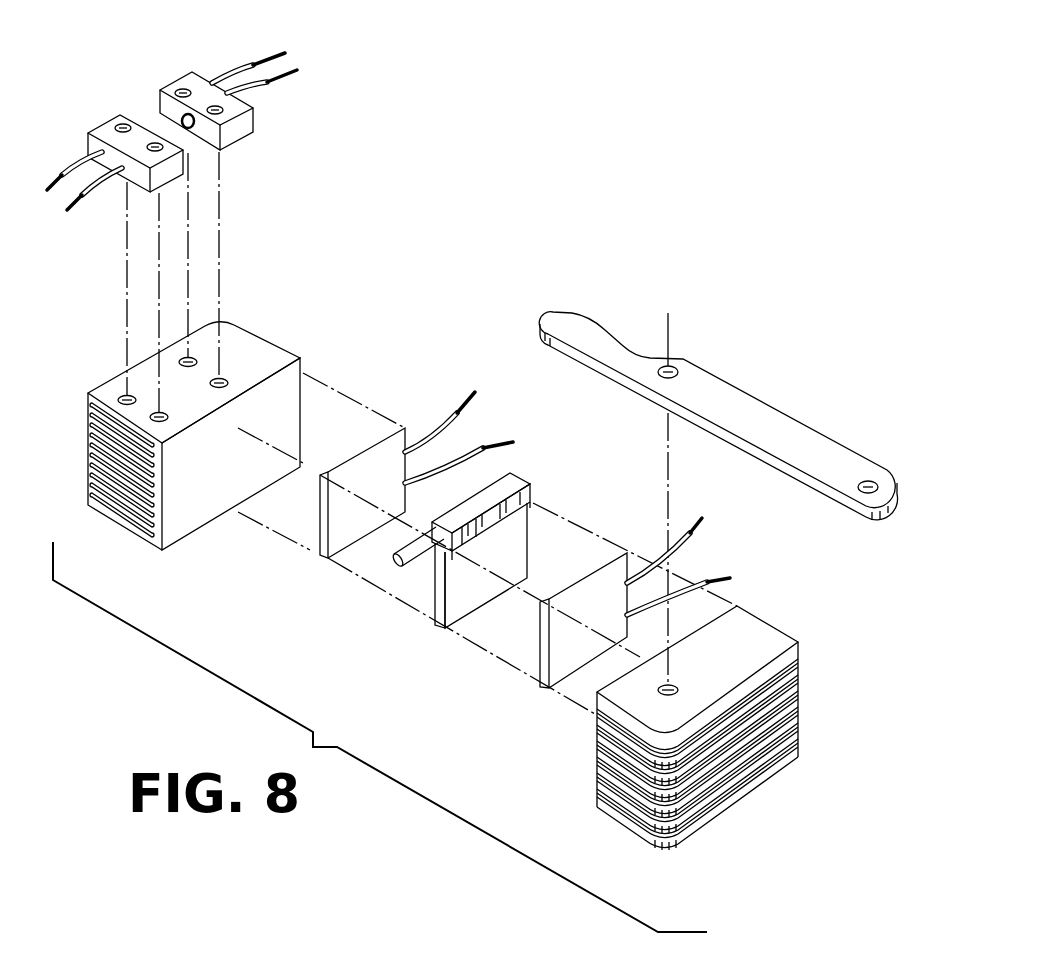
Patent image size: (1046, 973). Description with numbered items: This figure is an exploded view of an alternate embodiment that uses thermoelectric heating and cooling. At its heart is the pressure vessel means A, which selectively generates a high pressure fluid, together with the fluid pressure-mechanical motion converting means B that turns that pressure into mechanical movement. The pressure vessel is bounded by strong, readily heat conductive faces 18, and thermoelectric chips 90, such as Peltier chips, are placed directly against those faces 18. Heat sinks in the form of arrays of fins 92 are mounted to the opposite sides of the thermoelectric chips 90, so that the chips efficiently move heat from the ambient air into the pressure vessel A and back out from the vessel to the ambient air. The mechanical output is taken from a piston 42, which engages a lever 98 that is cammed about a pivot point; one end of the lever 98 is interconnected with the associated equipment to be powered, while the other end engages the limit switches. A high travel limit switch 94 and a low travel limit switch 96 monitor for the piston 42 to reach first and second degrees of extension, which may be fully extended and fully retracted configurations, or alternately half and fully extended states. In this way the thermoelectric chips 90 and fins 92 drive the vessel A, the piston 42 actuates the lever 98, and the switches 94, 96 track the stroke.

The low travel limit switch 96 is at (108, 130).
The high travel limit switch 94 is at (237, 128).
The heat sink fins 92 is at (237, 340).
The thermoelectric chip 90 is at (342, 522).
The heat conductive face 18 is at (472, 588).
The fluid pressure-mechanical motion converting means B is at (512, 472).
The pressure vessel means A is at (507, 543).
The piston 42 is at (395, 563).
The lever 98 is at (717, 397).